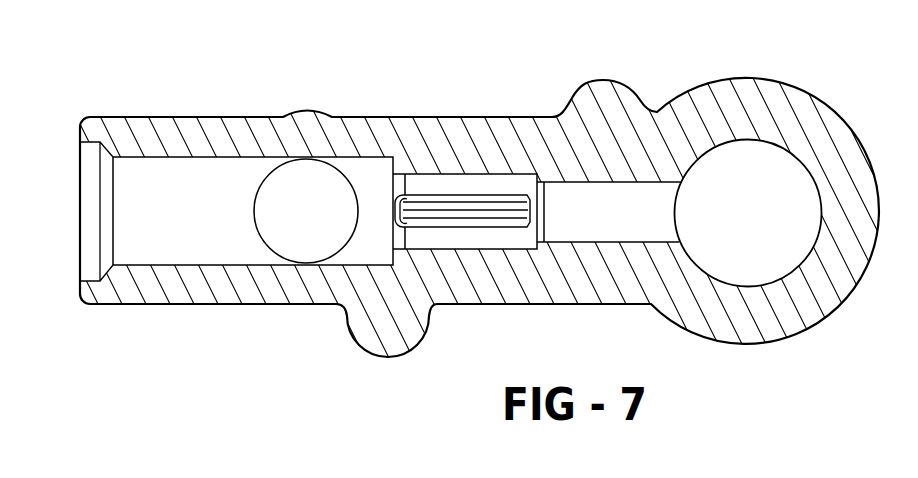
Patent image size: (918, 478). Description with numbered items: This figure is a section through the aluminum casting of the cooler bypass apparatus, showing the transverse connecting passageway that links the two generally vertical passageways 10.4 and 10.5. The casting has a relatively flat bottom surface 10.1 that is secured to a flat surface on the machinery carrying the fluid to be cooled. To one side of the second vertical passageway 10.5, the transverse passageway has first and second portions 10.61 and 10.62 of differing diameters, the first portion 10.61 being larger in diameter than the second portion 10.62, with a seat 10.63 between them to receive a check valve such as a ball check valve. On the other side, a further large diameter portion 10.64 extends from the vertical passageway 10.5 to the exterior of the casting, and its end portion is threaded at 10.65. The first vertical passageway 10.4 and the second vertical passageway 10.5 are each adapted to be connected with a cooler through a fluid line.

The flat bottom surface 10.1 is at (843, 114).
The first vertical passageway 10.4 is at (700, 153).
The second vertical passageway 10.5 is at (298, 178).
The first portion of transverse passageway 10.61 is at (422, 172).
The second portion of transverse passageway 10.62 is at (633, 182).
The seat 10.63 is at (542, 244).
The further large diameter portion 10.64 is at (128, 158).
The threaded end portion 10.65 is at (92, 143).